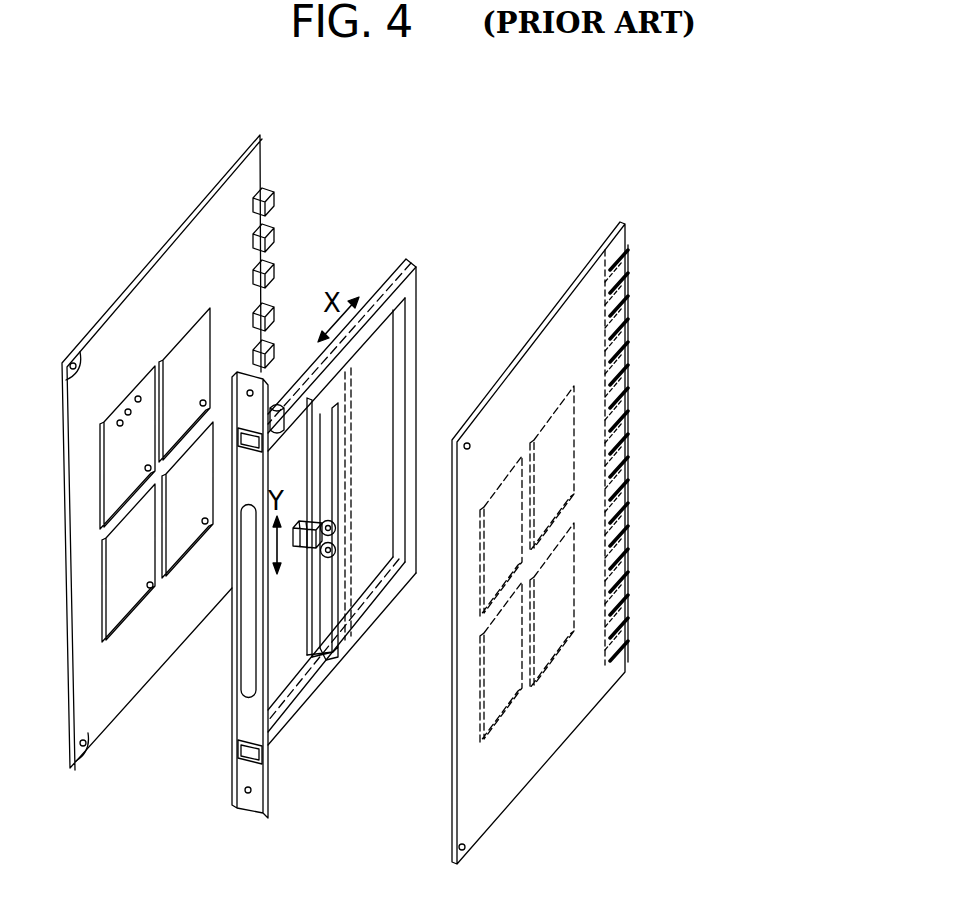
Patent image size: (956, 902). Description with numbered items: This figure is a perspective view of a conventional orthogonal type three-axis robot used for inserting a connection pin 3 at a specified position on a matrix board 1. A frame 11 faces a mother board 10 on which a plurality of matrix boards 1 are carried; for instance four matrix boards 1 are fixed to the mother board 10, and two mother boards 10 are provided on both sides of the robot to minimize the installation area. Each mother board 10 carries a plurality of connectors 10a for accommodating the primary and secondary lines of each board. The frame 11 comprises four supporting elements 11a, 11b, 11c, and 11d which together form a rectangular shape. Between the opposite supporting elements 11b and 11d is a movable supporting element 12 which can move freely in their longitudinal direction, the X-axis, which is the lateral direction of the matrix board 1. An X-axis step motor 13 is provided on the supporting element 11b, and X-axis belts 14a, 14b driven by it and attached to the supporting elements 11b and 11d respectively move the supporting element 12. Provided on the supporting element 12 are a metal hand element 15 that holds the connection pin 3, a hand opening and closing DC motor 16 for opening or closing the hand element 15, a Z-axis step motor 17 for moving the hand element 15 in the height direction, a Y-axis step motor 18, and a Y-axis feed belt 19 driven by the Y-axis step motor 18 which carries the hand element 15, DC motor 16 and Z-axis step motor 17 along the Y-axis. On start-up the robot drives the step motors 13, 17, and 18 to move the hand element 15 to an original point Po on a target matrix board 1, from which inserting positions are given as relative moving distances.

The mother board 10 is at (126, 291).
The connector 10a is at (271, 194).
The matrix board 1 is at (120, 412).
The connection pin 3 is at (143, 388).
The original point Po is at (205, 400).
The frame 11 is at (378, 466).
The supporting element 11a is at (241, 670).
The supporting element 11b is at (345, 319).
The supporting element 11c is at (420, 386).
The supporting element 11d is at (350, 651).
The movable supporting element 12 is at (310, 444).
The X-axis step motor 13 is at (274, 402).
The X-axis belt 14a is at (376, 292).
The X-axis belt 14b is at (385, 597).
The hand element 15 is at (300, 547).
The hand opening and closing DC motor 16 is at (336, 525).
The Z-axis step motor 17 is at (336, 549).
The Y-axis step motor 18 is at (328, 645).
The Y-axis feed belt 19 is at (344, 413).